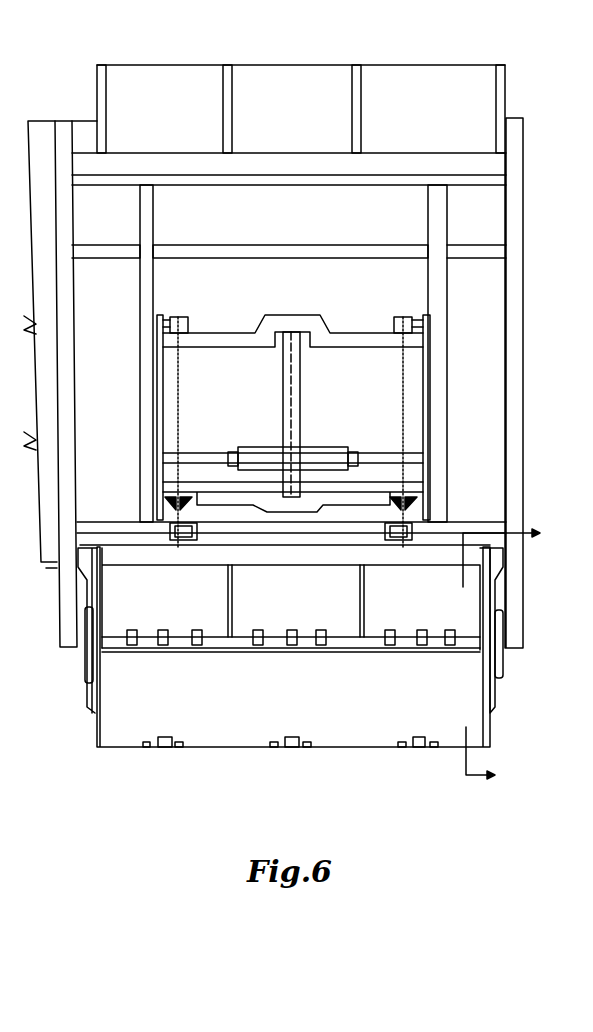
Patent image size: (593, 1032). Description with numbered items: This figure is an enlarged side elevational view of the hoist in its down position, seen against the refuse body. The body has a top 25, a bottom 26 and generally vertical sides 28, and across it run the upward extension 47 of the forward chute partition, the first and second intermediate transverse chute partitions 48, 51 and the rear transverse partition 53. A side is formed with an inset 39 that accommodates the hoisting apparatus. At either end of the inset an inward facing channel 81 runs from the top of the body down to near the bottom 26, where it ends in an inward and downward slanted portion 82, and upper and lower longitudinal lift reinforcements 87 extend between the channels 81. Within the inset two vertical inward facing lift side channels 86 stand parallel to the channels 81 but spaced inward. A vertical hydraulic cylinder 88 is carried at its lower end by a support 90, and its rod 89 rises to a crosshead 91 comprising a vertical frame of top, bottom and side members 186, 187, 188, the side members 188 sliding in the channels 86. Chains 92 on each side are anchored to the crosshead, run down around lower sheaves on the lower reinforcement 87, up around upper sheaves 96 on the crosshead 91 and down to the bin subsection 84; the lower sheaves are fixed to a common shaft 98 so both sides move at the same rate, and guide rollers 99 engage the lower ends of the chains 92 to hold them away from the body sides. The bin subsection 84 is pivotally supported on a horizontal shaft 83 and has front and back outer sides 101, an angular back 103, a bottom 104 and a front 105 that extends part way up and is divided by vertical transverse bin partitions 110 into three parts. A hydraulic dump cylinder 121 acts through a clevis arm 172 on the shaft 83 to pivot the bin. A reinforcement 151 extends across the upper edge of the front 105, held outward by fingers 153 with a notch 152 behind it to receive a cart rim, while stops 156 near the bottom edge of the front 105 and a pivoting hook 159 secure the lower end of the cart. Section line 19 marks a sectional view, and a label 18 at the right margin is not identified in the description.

The refuse collection vehicle body 18 is at (588, 571).
The section line 19 is at (511, 655).
The top 25 is at (40, 121).
The bottom 26 is at (60, 570).
The sides 28 is at (55, 395).
The inset 39 is at (510, 312).
The upward extension 47 is at (506, 78).
The first intermediate transverse chute partition 48 is at (361, 78).
The second intermediate transverse chute partition 51 is at (232, 82).
The rear transverse partition 53 is at (107, 82).
The inward facing channel 81 is at (70, 360).
The slanted portion 82 is at (64, 648).
The horizontal shaft 83 is at (508, 562).
The bin subsection 84 is at (178, 748).
The lift side channels 86 is at (140, 304).
The longitudinal lift reinforcements 87 is at (258, 247).
The vertical hydraulic cylinder 88 is at (285, 400).
The rod 89 is at (270, 322).
The support 90 is at (298, 548).
The crosshead 91 is at (330, 318).
The chains 92 is at (178, 412).
The upper sheaves 96 is at (178, 317).
The common longitudinal horizontal shaft 98 is at (345, 548).
The guide rollers 99 is at (188, 548).
The outer sides 101 is at (98, 702).
The angular back 103 is at (165, 608).
The bottom 104 is at (256, 748).
The front 105 is at (240, 717).
The vertical transverse bin partitions 110 is at (232, 598).
The hydraulic dump cylinder 121 is at (503, 665).
The reinforcement 151 is at (360, 650).
The notch 152 is at (470, 650).
The fingers 153 is at (298, 646).
The stops 156 is at (430, 738).
The hook 159 is at (412, 750).
The arm 172 is at (503, 586).
The top member 186 is at (208, 340).
The bottom member 187 is at (332, 450).
The side members 188 is at (163, 367).